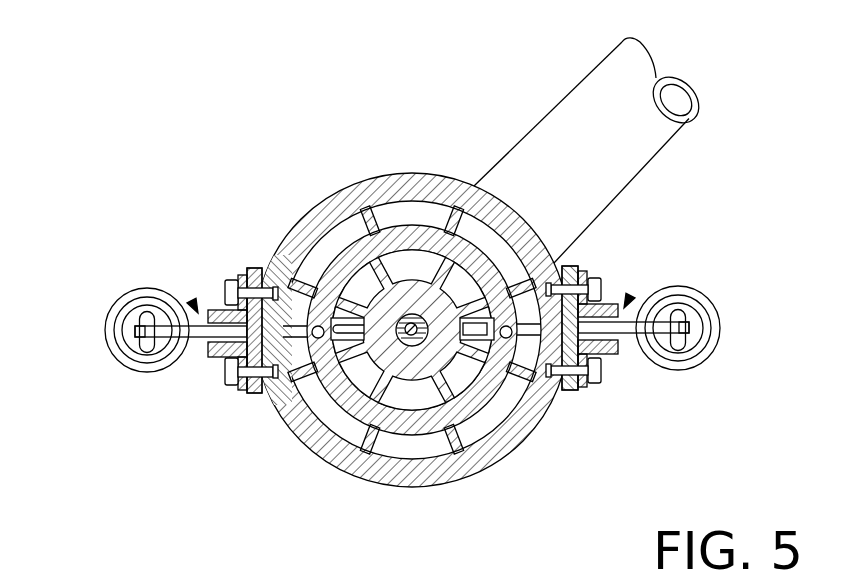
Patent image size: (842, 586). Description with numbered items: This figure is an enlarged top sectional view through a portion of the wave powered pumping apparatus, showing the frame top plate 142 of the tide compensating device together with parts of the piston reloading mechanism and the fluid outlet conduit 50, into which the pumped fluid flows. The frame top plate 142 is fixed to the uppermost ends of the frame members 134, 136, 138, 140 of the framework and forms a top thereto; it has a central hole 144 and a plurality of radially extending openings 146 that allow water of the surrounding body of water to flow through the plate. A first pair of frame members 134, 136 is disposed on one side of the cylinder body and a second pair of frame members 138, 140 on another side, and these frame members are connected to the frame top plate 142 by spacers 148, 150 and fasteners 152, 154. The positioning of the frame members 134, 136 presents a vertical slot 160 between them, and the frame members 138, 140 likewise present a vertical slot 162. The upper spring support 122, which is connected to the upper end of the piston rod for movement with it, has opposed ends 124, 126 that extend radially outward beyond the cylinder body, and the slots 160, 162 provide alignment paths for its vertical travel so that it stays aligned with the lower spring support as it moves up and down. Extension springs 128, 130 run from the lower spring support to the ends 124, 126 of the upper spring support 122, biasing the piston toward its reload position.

The conduit 50 is at (583, 95).
The upper spring support 122 is at (208, 352).
The end of upper spring support 124 is at (180, 325).
The end of upper spring support 126 is at (620, 335).
The extension spring 128 is at (108, 340).
The extension spring 130 is at (718, 339).
The frame member 134 is at (224, 372).
The frame member 136 is at (212, 308).
The frame member 138 is at (604, 353).
The frame member 140 is at (609, 303).
The frame top plate 142 is at (336, 196).
The central hole 144 is at (383, 350).
The radially extending openings 146 is at (452, 383).
The spacer 148 is at (248, 393).
The spacer 150 is at (578, 390).
The fastener 152 is at (240, 365).
The fastener 154 is at (593, 375).
The vertical slot 160 is at (192, 300).
The vertical slot 162 is at (630, 296).